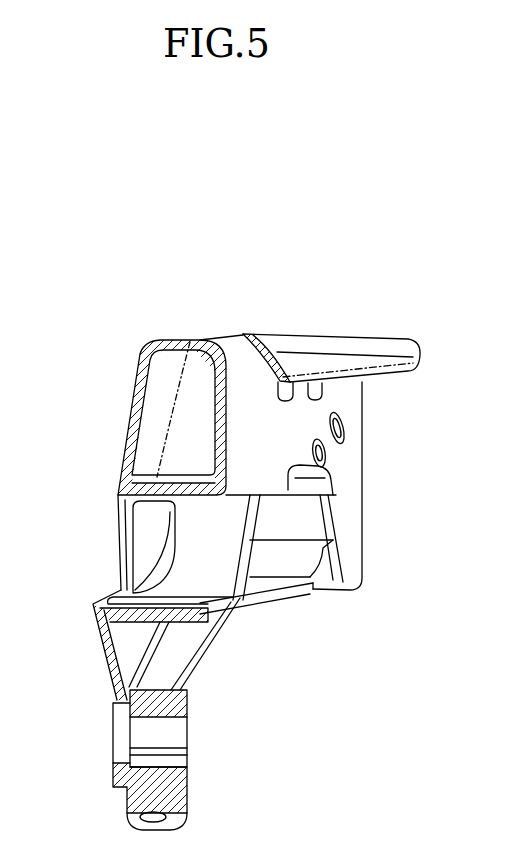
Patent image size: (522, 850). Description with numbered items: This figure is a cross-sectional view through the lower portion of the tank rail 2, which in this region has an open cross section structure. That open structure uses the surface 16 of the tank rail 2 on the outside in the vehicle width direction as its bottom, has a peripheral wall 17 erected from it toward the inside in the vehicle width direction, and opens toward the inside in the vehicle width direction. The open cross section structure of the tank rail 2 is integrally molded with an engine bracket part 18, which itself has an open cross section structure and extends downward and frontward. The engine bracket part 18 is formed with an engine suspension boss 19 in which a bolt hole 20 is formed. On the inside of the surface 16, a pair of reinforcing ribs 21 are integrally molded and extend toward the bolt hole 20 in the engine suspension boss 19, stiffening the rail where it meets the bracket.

The tank rail 2 is at (212, 336).
The surface 16 is at (143, 532).
The peripheral wall 17 is at (283, 583).
The engine bracket part 18 is at (118, 683).
The engine suspension boss 19 is at (180, 800).
The bolt hole 20 is at (160, 720).
The reinforcing ribs 21 is at (203, 558).